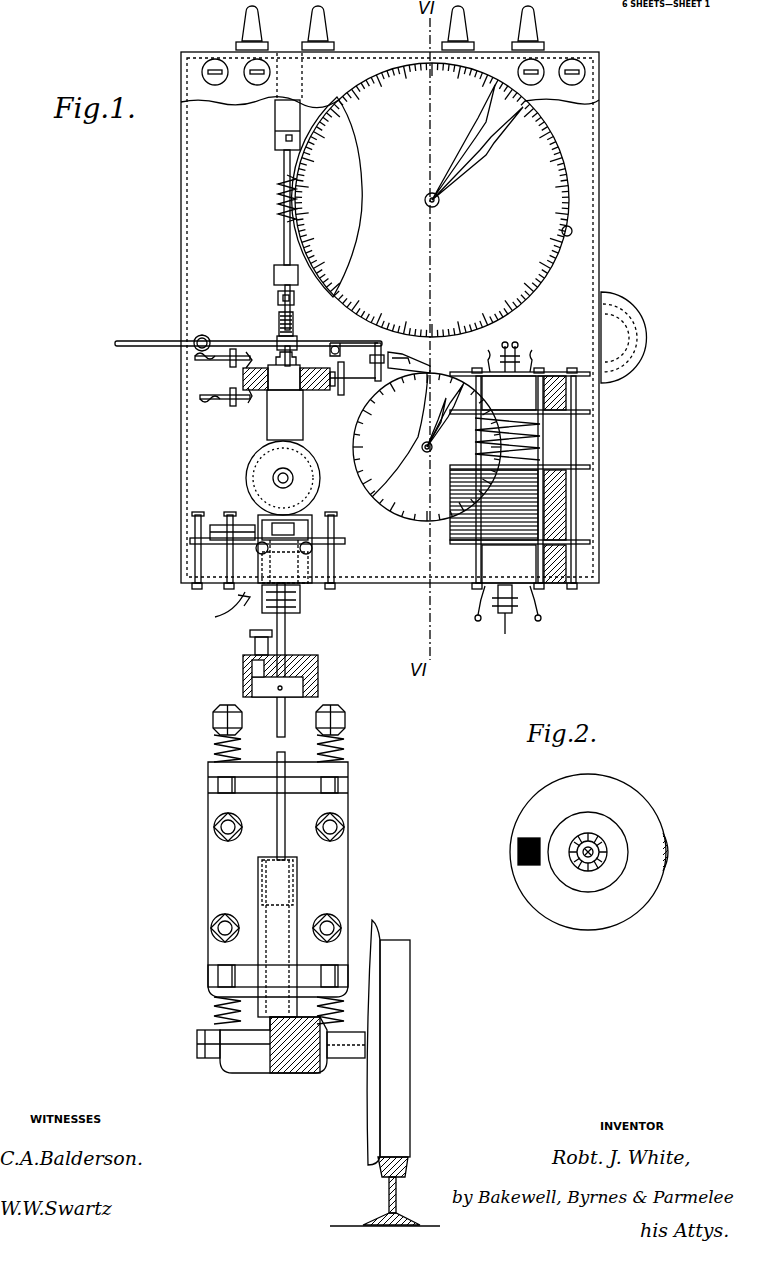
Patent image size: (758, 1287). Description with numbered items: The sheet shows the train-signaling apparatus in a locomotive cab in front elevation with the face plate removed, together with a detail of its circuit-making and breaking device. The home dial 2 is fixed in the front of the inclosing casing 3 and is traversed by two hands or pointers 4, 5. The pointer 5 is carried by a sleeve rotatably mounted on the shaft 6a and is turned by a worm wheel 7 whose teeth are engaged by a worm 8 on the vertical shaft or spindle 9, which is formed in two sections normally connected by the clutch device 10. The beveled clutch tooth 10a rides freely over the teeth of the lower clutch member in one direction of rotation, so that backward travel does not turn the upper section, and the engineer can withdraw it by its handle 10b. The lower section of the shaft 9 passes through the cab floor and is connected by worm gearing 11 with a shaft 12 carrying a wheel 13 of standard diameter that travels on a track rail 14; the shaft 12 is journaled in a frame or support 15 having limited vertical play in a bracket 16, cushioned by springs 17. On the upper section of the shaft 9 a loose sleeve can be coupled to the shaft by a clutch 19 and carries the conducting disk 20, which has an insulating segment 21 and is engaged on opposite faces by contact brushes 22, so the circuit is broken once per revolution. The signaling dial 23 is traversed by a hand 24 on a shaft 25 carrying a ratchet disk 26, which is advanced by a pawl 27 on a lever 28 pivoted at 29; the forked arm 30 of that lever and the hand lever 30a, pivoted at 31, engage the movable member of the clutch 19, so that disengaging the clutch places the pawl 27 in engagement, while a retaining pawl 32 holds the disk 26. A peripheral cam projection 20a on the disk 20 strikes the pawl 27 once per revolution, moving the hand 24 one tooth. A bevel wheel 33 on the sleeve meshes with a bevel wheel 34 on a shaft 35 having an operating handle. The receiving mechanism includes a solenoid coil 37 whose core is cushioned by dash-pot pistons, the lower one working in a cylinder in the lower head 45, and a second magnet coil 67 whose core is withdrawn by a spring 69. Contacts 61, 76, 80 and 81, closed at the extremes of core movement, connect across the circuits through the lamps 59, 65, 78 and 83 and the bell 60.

In FIG. 1, the home dial 2 is at (432, 200).
In FIG. 1, the inclosing casing 3 is at (181, 219).
In FIG. 1, the hand or pointer 4 is at (460, 150).
In FIG. 1, the hand or pointer 5 is at (466, 163).
In FIG. 1, the shaft 6a is at (440, 201).
In FIG. 1, the worm wheel 7 is at (327, 197).
In FIG. 1, the worm 8 is at (278, 196).
In FIG. 1, the vertical shaft or spindle 9 is at (284, 242).
In FIG. 2, the vertical shaft or spindle 9 is at (584, 858).
In FIG. 1, the clutch device 10 is at (318, 672).
In FIG. 1, the clutch tooth 10a is at (252, 672).
In FIG. 1, the handle 10b is at (250, 640).
In FIG. 1, the worm gearing 11 is at (248, 1072).
In FIG. 1, the shaft 12 is at (350, 1062).
In FIG. 1, the wheel 13 is at (372, 1118).
In FIG. 1, the track rail 14 is at (389, 1195).
In FIG. 1, the frame or support 15 is at (208, 884).
In FIG. 1, the frame or bracket 16 is at (208, 975).
In FIG. 1, the springs 17 is at (213, 745).
In FIG. 1, the clutch 19 is at (296, 368).
In FIG. 2, the clutch 19 is at (602, 855).
In FIG. 1, the disk 20 is at (316, 390).
In FIG. 2, the disk 20 is at (638, 898).
In FIG. 1, the peripheral cam projection 20a is at (330, 390).
In FIG. 2, the peripheral cam projection 20a is at (670, 853).
In FIG. 1, the insulating segment 21 is at (243, 376).
In FIG. 2, the insulating segment 21 is at (530, 867).
In FIG. 1, the contact brushes 22 is at (238, 355).
In FIG. 1, the signaling dial 23 is at (426, 446).
In FIG. 1, the hand or pointer 24 is at (445, 418).
In FIG. 1, the shaft 25 is at (445, 434).
In FIG. 1, the ratchet disk 26 is at (427, 447).
In FIG. 1, the pawl 27 is at (348, 386).
In FIG. 1, the lever 28 is at (372, 350).
In FIG. 1, the pivot 29 is at (331, 339).
In FIG. 1, the forked arm 30 is at (296, 340).
In FIG. 1, the hand lever 30a is at (143, 338).
In FIG. 1, the pivot 31 is at (205, 331).
In FIG. 1, the retaining pawl 32 is at (424, 368).
In FIG. 1, the bevel wheel 33 is at (247, 526).
In FIG. 1, the bevel wheel 34 is at (246, 478).
In FIG. 1, the shaft 35 is at (284, 469).
In FIG. 1, the solenoid magnet 37 is at (205, 522).
In FIG. 1, the lower head 45 is at (196, 560).
In FIG. 1, the visible signal 59 is at (247, 30).
In FIG. 1, the audible signal 60 is at (632, 331).
In FIG. 1, the contact 61 is at (219, 612).
In FIG. 1, the lamp 65 is at (322, 26).
In FIG. 1, the second magnet coil 67 is at (568, 495).
In FIG. 1, the spring 69 is at (545, 436).
In FIG. 1, the contact 76 is at (530, 370).
In FIG. 1, the lamp 78 is at (533, 27).
In FIG. 1, the contact 80 is at (477, 610).
In FIG. 1, the contact 81 is at (537, 620).
In FIG. 1, the lamp 83 is at (463, 27).